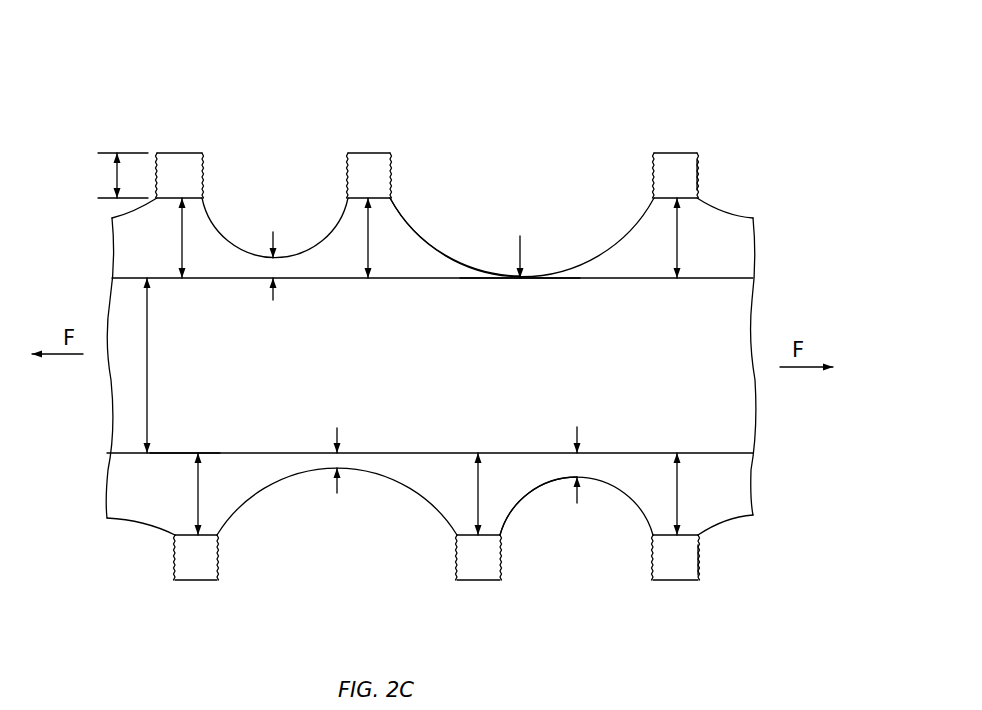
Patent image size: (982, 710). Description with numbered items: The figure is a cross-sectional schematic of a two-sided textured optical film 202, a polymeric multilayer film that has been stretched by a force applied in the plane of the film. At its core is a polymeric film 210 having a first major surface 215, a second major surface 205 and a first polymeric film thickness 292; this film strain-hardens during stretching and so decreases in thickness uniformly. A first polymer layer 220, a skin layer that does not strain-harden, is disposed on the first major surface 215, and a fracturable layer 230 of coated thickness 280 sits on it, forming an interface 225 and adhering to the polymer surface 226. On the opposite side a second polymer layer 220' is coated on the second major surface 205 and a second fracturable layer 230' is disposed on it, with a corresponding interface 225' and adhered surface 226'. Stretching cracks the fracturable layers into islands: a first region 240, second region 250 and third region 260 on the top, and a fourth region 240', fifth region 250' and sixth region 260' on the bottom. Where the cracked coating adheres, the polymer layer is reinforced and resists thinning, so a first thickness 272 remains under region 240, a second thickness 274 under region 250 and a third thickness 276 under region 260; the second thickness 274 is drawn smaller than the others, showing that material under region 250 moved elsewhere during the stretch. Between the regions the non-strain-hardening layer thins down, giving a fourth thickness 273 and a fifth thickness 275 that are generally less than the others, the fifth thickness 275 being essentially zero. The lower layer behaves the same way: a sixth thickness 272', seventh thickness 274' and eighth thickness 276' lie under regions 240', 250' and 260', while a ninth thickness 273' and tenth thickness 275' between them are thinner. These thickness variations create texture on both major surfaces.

The optical film 202 is at (128, 53).
The second major surface 205 is at (180, 452).
The polymeric film 210 is at (745, 304).
The first major surface 215 is at (470, 280).
The first polymer layer 220 is at (604, 237).
The second polymer layer 220' is at (662, 506).
The interface 225 is at (275, 213).
The interface 225' is at (337, 505).
The surface 226 is at (450, 236).
The surface 226' is at (472, 509).
The fracturable layer 230 is at (733, 174).
The second fracturable layer 230' is at (738, 561).
The first region 240 is at (180, 153).
The fourth region 240' is at (197, 580).
The second region 250 is at (368, 153).
The fifth region 250' is at (482, 581).
The third region 260 is at (678, 153).
The sixth region 260' is at (681, 581).
The first thickness 272 is at (151, 238).
The sixth thickness 272' is at (152, 512).
The fourth thickness 273 is at (300, 286).
The ninth thickness 273' is at (367, 445).
The second thickness 274 is at (395, 263).
The seventh thickness 274' is at (532, 503).
The fifth thickness 275 is at (527, 246).
The tenth thickness 275' is at (606, 451).
The third thickness 276 is at (651, 262).
The eighth thickness 276' is at (706, 471).
The coated thickness 280 is at (112, 173).
The first polymeric film thickness 292 is at (150, 335).